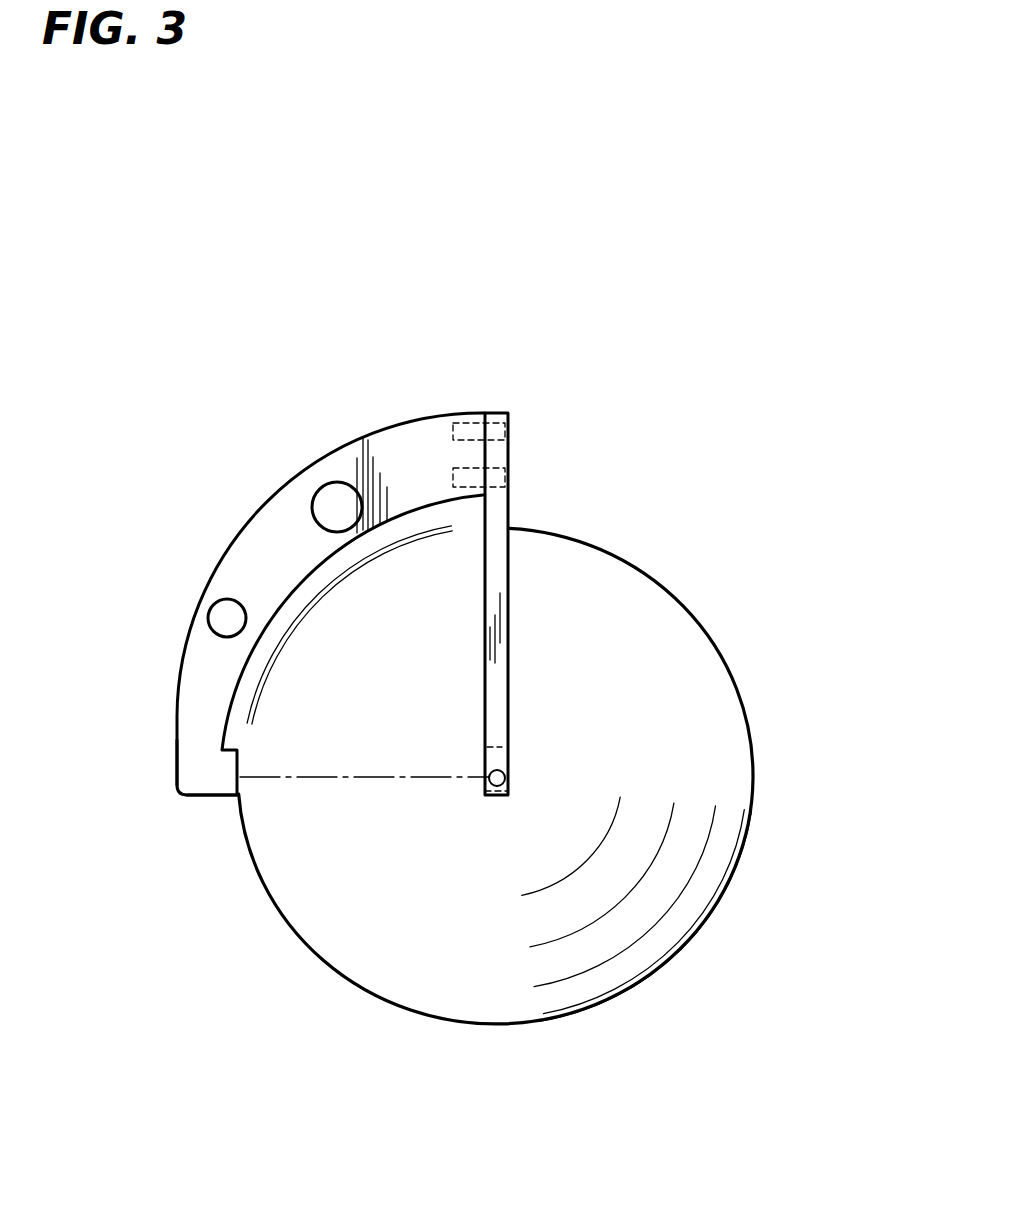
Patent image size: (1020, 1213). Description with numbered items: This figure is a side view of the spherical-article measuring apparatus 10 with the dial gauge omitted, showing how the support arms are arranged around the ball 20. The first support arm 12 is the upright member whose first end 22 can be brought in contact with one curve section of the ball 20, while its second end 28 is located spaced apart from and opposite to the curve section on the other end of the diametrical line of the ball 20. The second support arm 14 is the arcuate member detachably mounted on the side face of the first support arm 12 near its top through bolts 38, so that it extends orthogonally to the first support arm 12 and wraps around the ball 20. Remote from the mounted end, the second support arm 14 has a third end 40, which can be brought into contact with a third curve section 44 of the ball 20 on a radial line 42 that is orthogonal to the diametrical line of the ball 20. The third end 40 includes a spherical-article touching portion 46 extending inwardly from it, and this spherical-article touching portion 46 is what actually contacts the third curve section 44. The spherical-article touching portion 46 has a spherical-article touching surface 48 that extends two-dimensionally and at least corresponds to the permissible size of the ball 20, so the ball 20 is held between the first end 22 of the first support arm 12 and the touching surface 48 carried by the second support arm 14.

The spherical-article measuring apparatus 10 is at (477, 334).
The first support arm 12 is at (510, 658).
The second support arm 14 is at (290, 478).
The ball 20 is at (754, 800).
The first end 22 is at (510, 760).
The second end 28 is at (485, 797).
The bolts 38 is at (453, 430).
The third end 40 is at (180, 773).
The radial line 42 is at (371, 780).
The third curve section 44 is at (230, 783).
The spherical-article touching portion 46 is at (244, 723).
The spherical-article touching surface 48 is at (245, 761).